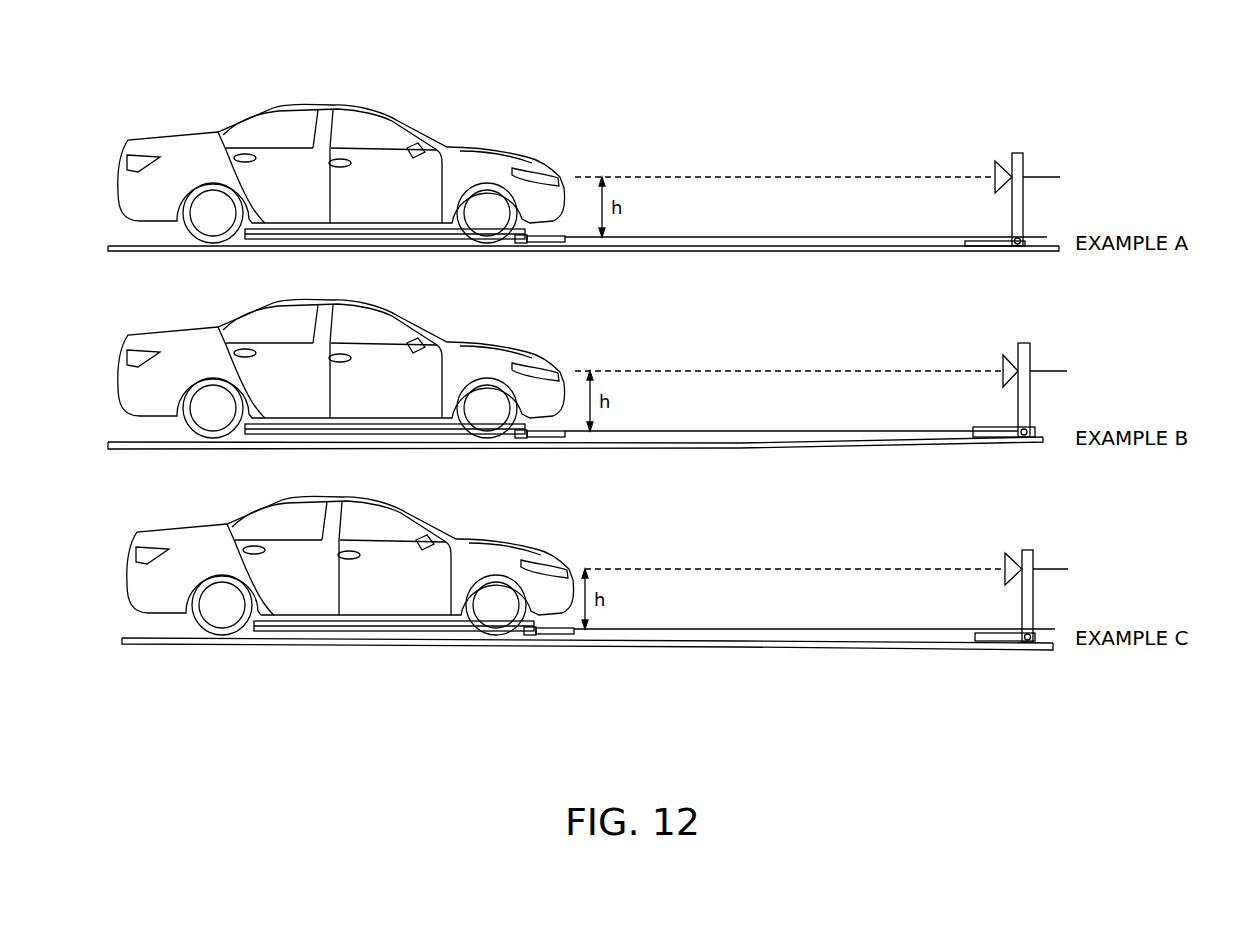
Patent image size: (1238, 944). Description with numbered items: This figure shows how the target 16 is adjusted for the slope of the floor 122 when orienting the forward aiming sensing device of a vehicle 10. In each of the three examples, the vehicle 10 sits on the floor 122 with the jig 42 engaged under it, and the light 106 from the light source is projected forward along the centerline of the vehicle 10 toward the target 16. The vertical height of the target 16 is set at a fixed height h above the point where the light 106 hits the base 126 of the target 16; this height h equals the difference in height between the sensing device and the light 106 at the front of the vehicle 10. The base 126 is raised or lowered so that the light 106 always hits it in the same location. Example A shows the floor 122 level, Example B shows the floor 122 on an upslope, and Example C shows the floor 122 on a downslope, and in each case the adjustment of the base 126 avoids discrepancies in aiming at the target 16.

The vehicle 10 is at (220, 127).
The target 16 is at (997, 160).
The jig 42 is at (400, 241).
The light 106 is at (735, 250).
The floor 122 is at (945, 253).
The base 126 is at (998, 247).